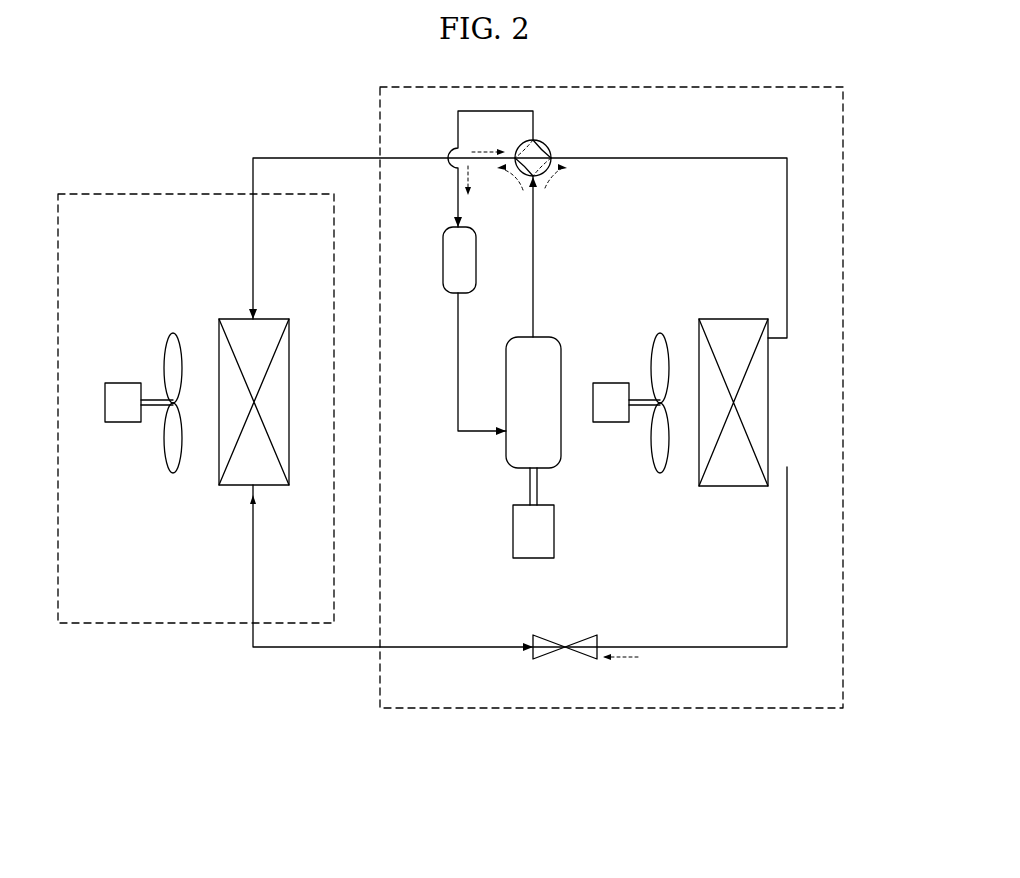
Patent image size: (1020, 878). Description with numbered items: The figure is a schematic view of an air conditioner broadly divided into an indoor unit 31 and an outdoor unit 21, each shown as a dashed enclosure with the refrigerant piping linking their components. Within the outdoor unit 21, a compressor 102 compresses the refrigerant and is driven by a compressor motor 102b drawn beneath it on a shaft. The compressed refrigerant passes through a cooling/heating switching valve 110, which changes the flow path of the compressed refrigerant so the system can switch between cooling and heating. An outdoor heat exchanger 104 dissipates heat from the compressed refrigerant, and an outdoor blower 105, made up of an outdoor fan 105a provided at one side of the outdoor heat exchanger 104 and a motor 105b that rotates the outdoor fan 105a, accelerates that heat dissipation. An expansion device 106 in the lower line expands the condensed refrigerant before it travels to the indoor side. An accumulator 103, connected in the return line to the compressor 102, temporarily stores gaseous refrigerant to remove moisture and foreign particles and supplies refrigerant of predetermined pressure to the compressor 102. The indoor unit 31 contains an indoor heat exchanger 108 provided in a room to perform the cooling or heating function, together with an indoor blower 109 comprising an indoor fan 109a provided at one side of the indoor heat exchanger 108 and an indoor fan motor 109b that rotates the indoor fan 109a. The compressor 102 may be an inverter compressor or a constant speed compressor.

The outdoor unit 21 is at (653, 708).
The indoor unit 31 is at (206, 623).
The compressor 102 is at (532, 438).
The compressor motor 102b is at (554, 530).
The accumulator 103 is at (443, 268).
The outdoor heat exchanger 104 is at (750, 390).
The outdoor blower 105 is at (623, 352).
The outdoor fan 105a is at (657, 346).
The motor 105b is at (610, 393).
The expansion device 106 is at (583, 655).
The indoor heat exchanger 108 is at (258, 472).
The indoor blower 109 is at (118, 528).
The indoor fan 109a is at (173, 462).
The indoor fan motor 109b is at (120, 412).
The cooling/heating switching valve 110 is at (546, 146).